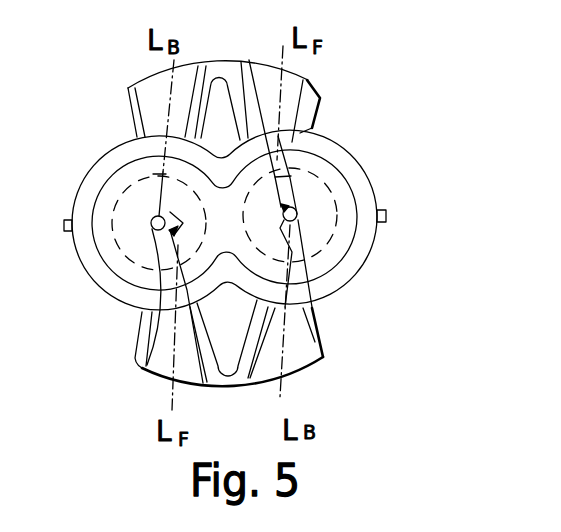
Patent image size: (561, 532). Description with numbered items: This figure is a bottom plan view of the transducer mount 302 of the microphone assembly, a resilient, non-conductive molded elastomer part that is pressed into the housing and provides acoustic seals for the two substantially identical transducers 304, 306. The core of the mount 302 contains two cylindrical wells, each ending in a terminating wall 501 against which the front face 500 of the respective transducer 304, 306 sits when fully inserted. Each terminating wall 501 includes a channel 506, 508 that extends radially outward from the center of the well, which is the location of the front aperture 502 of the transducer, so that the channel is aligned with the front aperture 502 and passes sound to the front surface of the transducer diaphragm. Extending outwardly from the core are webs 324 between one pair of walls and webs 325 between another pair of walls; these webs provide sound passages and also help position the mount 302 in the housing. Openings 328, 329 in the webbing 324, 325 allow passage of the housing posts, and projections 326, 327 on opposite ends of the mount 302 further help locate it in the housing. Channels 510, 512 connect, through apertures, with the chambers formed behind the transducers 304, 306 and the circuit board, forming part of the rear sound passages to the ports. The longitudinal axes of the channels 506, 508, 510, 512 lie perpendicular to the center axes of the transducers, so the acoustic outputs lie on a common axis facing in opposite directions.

The transducer mount 302 is at (378, 231).
The transducer 304 is at (170, 212).
The transducer 306 is at (292, 252).
The web 324 is at (222, 68).
The web 325 is at (318, 338).
The projection 326 is at (64, 226).
The projection 327 is at (388, 212).
The opening 328 is at (230, 102).
The opening 329 is at (230, 349).
The front face 500 is at (158, 258).
The terminating wall 501 is at (127, 204).
The front aperture 502 is at (151, 226).
The channel 506 is at (290, 110).
The channel 508 is at (163, 345).
The channel 510 is at (295, 355).
The channel 512 is at (152, 100).